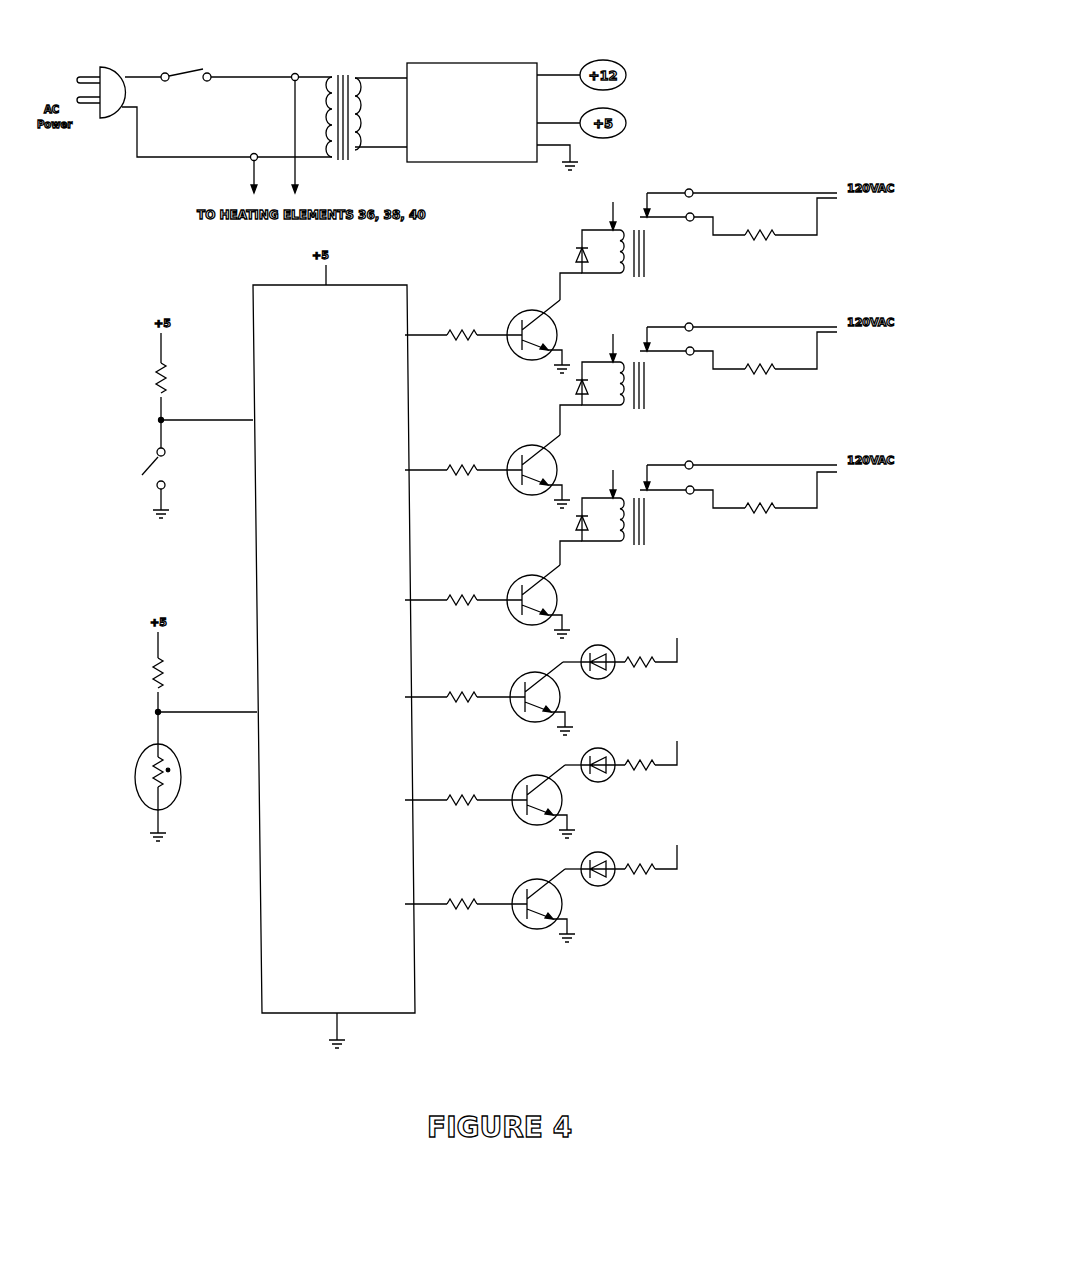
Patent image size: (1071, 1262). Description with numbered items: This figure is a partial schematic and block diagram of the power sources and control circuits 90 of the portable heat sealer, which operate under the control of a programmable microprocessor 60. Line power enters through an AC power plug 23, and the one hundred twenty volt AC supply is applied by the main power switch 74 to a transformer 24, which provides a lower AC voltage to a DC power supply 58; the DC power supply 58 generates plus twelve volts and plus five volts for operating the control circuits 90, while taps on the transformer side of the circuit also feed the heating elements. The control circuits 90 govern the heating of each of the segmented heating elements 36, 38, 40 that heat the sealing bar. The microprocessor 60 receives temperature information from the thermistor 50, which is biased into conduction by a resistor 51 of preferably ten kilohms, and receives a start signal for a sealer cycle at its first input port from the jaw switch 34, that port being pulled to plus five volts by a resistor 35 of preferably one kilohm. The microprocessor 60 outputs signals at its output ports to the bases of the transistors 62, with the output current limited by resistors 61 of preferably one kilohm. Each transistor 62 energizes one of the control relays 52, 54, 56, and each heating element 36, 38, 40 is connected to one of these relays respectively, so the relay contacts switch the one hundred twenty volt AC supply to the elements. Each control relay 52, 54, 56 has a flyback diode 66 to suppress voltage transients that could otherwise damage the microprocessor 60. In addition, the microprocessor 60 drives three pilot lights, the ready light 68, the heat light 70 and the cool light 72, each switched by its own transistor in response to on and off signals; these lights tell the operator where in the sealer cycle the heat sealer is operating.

The AC power plug 23 is at (114, 67).
The main power switch 74 is at (181, 72).
The transformer 24 is at (358, 160).
The DC power supply 58 is at (472, 112).
The control circuits 90 is at (750, 80).
The heating element 36 is at (750, 235).
The heating element 38 is at (750, 369).
The heating element 40 is at (750, 508).
The control relay 52 is at (650, 248).
The control relay 54 is at (650, 380).
The control relay 56 is at (650, 516).
The flyback diode 66 is at (576, 250).
The resistor 61 is at (448, 328).
The transistor 62 is at (524, 941).
The microprocessor 60 is at (334, 649).
The resistor 35 is at (166, 378).
The jaw switch 34 is at (163, 463).
The resistor 51 is at (163, 668).
The thermistor 50 is at (182, 767).
The ready pilot light 68 is at (595, 679).
The heat pilot light 70 is at (595, 782).
The cool pilot light 72 is at (595, 886).